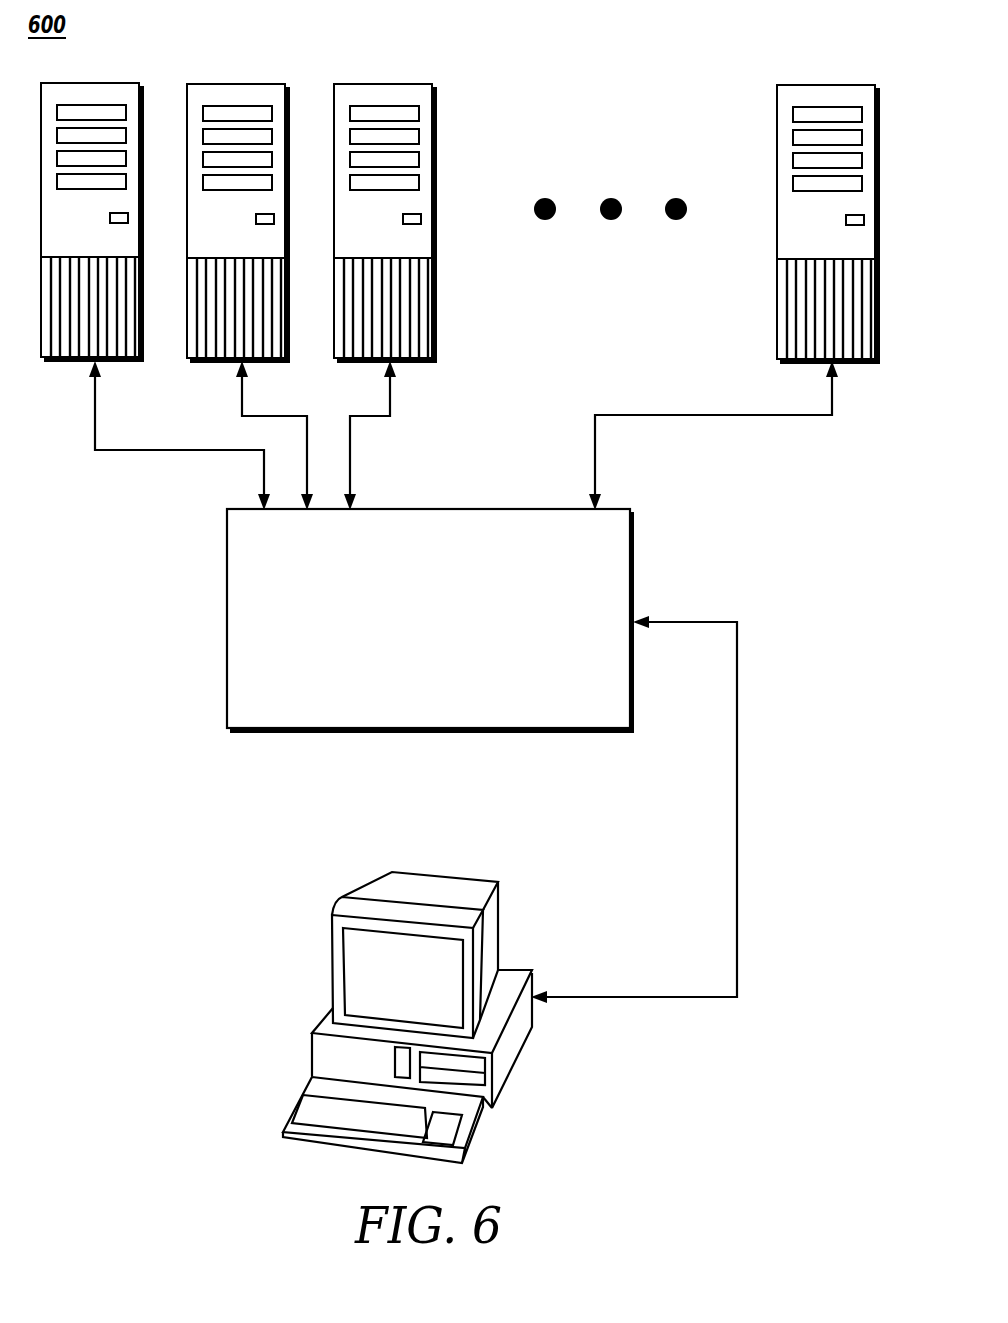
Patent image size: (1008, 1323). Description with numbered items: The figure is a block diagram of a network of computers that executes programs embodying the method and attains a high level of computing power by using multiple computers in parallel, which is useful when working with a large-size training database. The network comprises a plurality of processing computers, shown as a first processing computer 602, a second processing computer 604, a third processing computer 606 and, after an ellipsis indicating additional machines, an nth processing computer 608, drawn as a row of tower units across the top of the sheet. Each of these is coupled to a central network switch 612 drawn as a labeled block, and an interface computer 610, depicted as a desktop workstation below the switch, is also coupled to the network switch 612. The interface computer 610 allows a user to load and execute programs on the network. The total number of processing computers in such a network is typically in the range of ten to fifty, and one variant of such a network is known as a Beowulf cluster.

The first processing computer 602 is at (90, 83).
The second processing computer 604 is at (240, 84).
The third processing computer 606 is at (386, 84).
The nth processing computer 608 is at (828, 85).
The interface computer 610 is at (448, 877).
The network switch 612 is at (227, 621).